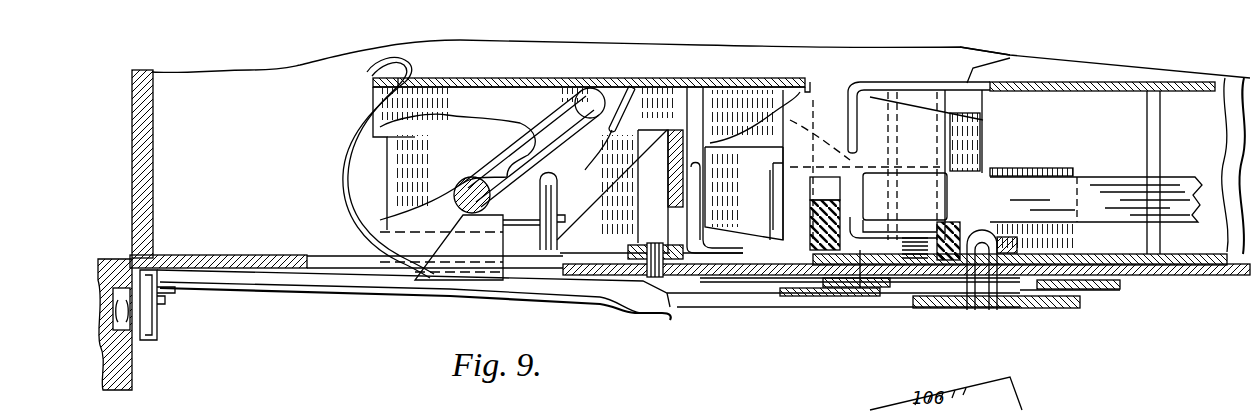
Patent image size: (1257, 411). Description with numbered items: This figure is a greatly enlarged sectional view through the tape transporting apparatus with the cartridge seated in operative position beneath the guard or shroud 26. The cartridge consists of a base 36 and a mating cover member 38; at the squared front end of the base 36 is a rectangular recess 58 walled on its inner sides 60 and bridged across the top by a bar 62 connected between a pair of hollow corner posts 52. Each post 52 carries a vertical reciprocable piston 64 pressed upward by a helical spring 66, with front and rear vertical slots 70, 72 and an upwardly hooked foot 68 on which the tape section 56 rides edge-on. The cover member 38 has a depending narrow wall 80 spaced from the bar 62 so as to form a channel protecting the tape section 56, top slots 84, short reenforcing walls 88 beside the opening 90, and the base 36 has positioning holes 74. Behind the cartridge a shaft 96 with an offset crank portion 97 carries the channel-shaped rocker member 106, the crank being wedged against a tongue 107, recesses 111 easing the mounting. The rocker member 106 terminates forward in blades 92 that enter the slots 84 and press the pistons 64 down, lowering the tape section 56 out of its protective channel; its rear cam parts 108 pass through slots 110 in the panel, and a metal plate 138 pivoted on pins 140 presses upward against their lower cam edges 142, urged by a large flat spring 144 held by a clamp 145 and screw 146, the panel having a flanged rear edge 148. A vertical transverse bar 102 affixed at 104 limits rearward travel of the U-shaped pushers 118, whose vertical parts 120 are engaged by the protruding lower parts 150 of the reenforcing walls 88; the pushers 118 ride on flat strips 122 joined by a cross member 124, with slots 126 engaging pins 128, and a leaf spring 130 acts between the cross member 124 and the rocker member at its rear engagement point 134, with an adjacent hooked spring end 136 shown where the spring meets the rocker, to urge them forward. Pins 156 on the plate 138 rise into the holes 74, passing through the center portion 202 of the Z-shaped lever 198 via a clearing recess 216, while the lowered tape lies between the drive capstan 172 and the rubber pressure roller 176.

The guard or shroud 26 is at (230, 70).
The base 36 is at (1132, 265).
The cover member 38 is at (1110, 82).
The hollow corner posts 52 is at (950, 268).
The tape section 56 is at (858, 215).
The rectangular recess 58 is at (1148, 275).
The inner side walls 60 is at (1147, 137).
The bar 62 is at (900, 150).
The reciprocable piston 64 is at (925, 230).
The helical springs 66 is at (905, 262).
The upwardly hooked foot 68 is at (855, 256).
The front vertical slot 70 is at (862, 288).
The rear vertical slot 72 is at (935, 200).
The positioning holes 74 is at (998, 270).
The depending narrow wall 80 is at (848, 110).
The slots 84 is at (1010, 54).
The reenforcing wall 88 is at (815, 92).
The opening 90 is at (780, 95).
The blades 92 is at (960, 128).
The shaft 96 is at (470, 215).
The crank portion 97 is at (570, 100).
The bar 102 is at (688, 125).
The fastening of the bar 104 is at (622, 125).
The rocker member 106 is at (481, 72).
The tongue 107 is at (596, 150).
The cam part 108 is at (385, 238).
The slots 110 is at (343, 267).
The recesses 111 is at (561, 205).
The U-shaped pushers 118 is at (752, 275).
The vertical parts 120 is at (795, 300).
The flat strips 122 is at (703, 184).
The cross member 124 is at (562, 230).
The slots 126 is at (665, 310).
The pins 128 is at (683, 278).
The leaf spring 130 is at (346, 175).
The rear engagement point of rocker 134 is at (372, 74).
The spring hook 136 is at (404, 78).
The metal plate 138 is at (492, 200).
The pins 140 is at (170, 292).
The lower cam edges 142 is at (448, 280).
The flat spring 144 is at (592, 318).
The clamp 145 is at (160, 338).
The screw 146 is at (165, 304).
The flanged rear edge 148 is at (132, 355).
The protruding lower parts of reenforcing walls 150 is at (822, 296).
The pins 156 is at (1005, 310).
The drive capstan 172 is at (825, 188).
The rubber pressure roller 176 is at (1030, 168).
The Z-shaped lever 198 is at (1075, 292).
The center portion 202 is at (1105, 292).
The slot or recess 216 is at (924, 288).